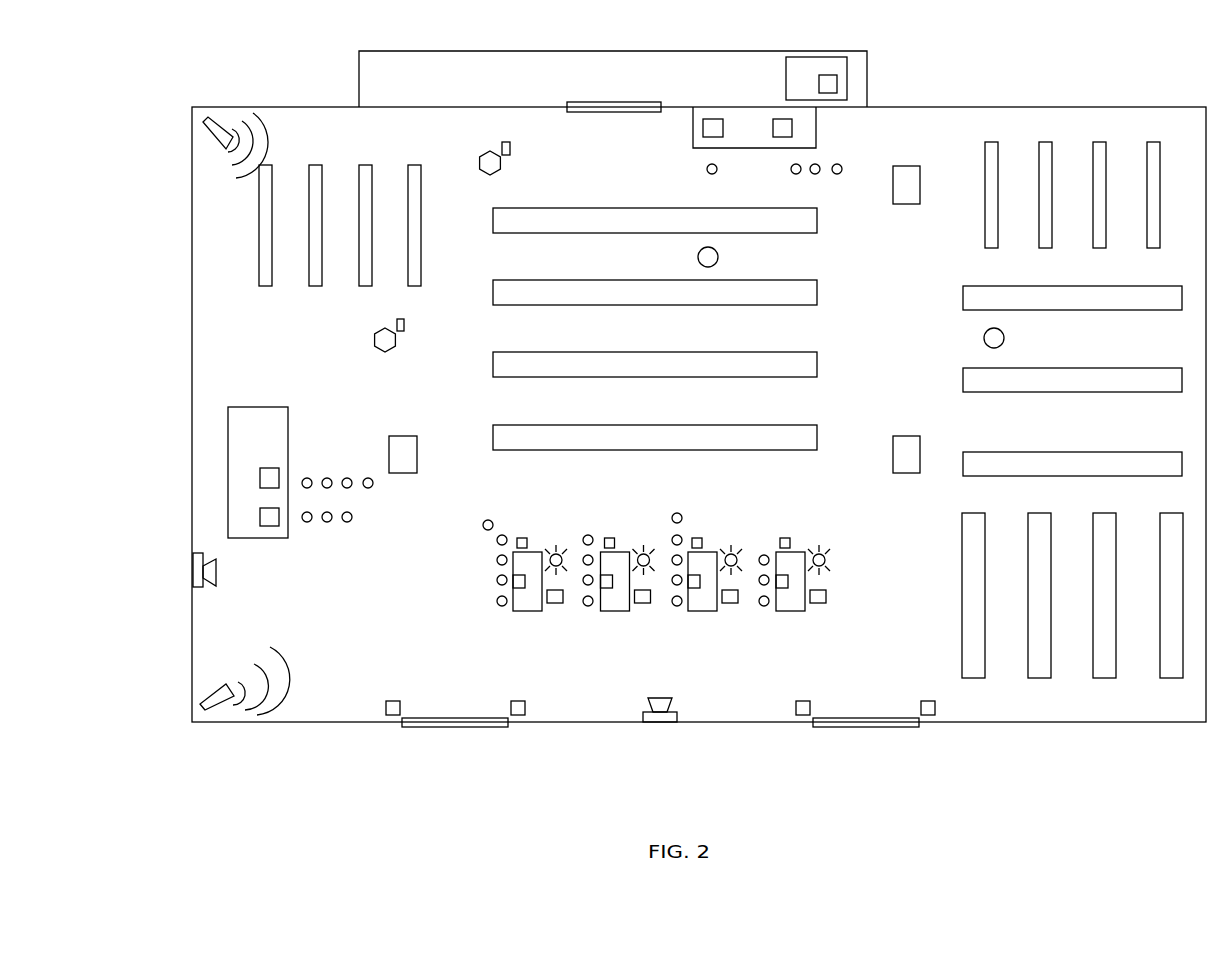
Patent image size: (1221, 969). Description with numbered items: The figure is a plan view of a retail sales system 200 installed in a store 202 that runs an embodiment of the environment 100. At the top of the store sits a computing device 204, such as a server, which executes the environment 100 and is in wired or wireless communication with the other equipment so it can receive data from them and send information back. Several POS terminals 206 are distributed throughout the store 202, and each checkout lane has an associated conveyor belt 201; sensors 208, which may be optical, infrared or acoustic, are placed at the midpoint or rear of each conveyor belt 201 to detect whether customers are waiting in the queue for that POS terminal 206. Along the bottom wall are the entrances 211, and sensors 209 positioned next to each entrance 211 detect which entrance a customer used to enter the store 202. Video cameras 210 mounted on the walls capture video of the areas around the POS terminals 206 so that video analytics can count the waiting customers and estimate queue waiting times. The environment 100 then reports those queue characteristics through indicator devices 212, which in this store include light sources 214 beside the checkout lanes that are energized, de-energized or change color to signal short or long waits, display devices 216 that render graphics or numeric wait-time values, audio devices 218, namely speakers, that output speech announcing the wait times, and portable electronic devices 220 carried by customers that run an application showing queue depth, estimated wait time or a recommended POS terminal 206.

The environment 100 is at (837, 84).
The retail sales system 200 is at (868, 776).
The conveyor belt 201 is at (533, 600).
The store 202 is at (567, 724).
The computing device 204 is at (847, 68).
The POS terminal 206 is at (703, 128).
The sensor 208 is at (522, 538).
The sensor 209 is at (394, 716).
The video camera 210 is at (203, 548).
The entrance 211 is at (430, 738).
The indicator device 212 is at (247, 128).
The light source 214 is at (552, 554).
The display device 216 is at (907, 204).
The audio device 218 is at (212, 131).
The portable electronic device 220 is at (510, 150).